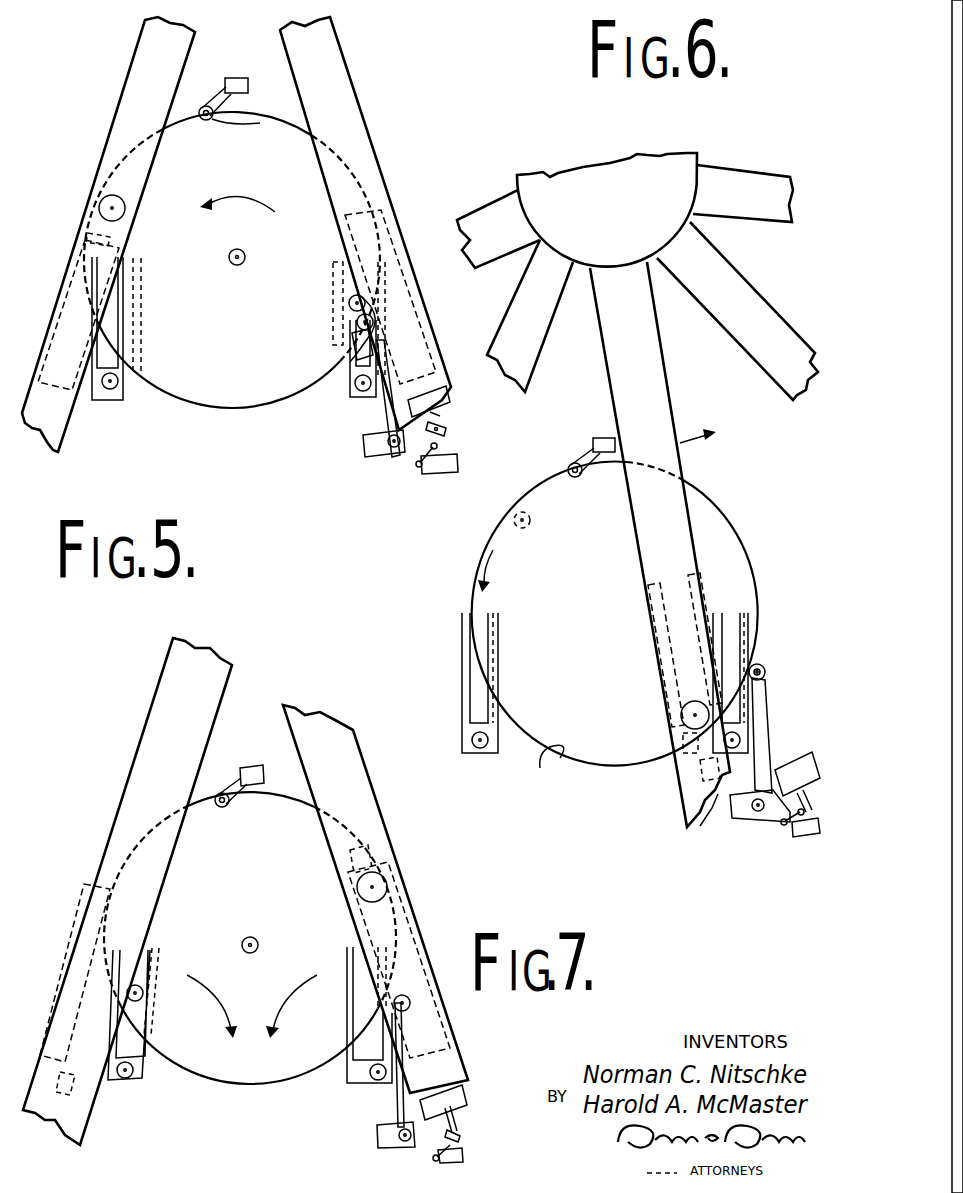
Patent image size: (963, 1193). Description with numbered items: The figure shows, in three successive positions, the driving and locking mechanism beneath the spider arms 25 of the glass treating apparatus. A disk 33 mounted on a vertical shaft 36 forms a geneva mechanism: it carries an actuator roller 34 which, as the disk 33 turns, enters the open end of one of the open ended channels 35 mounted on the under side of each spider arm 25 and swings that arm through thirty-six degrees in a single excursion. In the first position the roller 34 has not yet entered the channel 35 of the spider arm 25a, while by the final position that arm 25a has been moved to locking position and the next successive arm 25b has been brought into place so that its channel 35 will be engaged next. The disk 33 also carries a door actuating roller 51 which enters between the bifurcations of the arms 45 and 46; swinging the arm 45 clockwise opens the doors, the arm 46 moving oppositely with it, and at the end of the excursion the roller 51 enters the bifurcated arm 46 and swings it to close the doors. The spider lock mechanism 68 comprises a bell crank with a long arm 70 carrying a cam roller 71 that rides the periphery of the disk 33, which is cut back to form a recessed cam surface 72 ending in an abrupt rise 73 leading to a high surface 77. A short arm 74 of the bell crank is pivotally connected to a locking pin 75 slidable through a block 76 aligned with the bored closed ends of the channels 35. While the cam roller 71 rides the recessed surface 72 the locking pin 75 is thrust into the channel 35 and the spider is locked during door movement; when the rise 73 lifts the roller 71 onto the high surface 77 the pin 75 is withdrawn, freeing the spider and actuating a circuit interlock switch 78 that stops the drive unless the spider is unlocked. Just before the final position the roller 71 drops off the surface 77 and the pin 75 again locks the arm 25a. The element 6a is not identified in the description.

In FIG. 5, the spider arms 25 is at (376, 160).
In FIG. 6, the spider arms 25 is at (738, 353).
In FIG. 5, the spider arm 25a is at (80, 231).
In FIG. 6, the spider arm 25a is at (672, 392).
In FIG. 7, the spider arm 25a is at (370, 780).
In FIG. 6, the spider arm 25b is at (548, 350).
In FIG. 7, the spider arm 25b is at (138, 756).
In FIG. 5, the disk 33 is at (283, 125).
In FIG. 6, the disk 33 is at (737, 514).
In FIG. 7, the disk 33 is at (209, 782).
In FIG. 5, the actuator roller 34 is at (98, 204).
In FIG. 6, the actuator roller 34 is at (665, 752).
In FIG. 7, the actuator roller 34 is at (386, 878).
In FIG. 5, the open ended channels 35 is at (73, 290).
In FIG. 6, the open ended channels 35 is at (685, 650).
In FIG. 7, the open ended channels 35 is at (100, 915).
In FIG. 5, the vertical shaft 36 is at (240, 266).
In FIG. 7, the vertical shaft 36 is at (255, 951).
In FIG. 5, the bifurcated arm 45 is at (348, 397).
In FIG. 6, the bifurcated arm 45 is at (756, 612).
In FIG. 7, the bifurcated arm 45 is at (362, 1082).
In FIG. 5, the bifurcated arm 46 is at (130, 398).
In FIG. 6, the bifurcated arm 46 is at (462, 745).
In FIG. 7, the bifurcated arm 46 is at (140, 1080).
In FIG. 5, the door actuating roller 51 is at (348, 301).
In FIG. 5, the spider lock mechanism 68 is at (458, 405).
In FIG. 6, the spider lock mechanism 68 is at (774, 706).
In FIG. 7, the spider lock mechanism 68 is at (385, 1108).
In FIG. 6, the long arm 70 is at (768, 672).
In FIG. 6, the cam roller 71 is at (766, 665).
In FIG. 6, the recessed cam surface 72 is at (551, 762).
In FIG. 5, the abrupt rise 73 is at (350, 346).
In FIG. 6, the abrupt rise 73 is at (566, 470).
In FIG. 5, the short arm 74 is at (412, 455).
In FIG. 6, the short arm 74 is at (782, 815).
In FIG. 7, the short arm 74 is at (396, 1135).
In FIG. 5, the locking pin 75 is at (446, 430).
In FIG. 6, the locking pin 75 is at (797, 765).
In FIG. 7, the locking pin 75 is at (456, 1119).
In FIG. 5, the block 76 is at (440, 405).
In FIG. 6, the block 76 is at (800, 757).
In FIG. 7, the high surface 77 is at (224, 790).
In FIG. 5, the circuit interlock switch 78 is at (458, 461).
In FIG. 6, the circuit interlock switch 78 is at (812, 838).
In FIG. 7, the circuit interlock switch 78 is at (463, 1160).
In FIG. 6, the base 6a is at (732, 796).